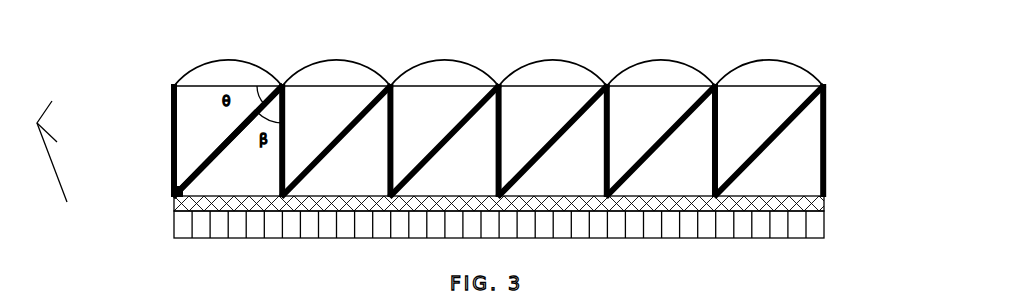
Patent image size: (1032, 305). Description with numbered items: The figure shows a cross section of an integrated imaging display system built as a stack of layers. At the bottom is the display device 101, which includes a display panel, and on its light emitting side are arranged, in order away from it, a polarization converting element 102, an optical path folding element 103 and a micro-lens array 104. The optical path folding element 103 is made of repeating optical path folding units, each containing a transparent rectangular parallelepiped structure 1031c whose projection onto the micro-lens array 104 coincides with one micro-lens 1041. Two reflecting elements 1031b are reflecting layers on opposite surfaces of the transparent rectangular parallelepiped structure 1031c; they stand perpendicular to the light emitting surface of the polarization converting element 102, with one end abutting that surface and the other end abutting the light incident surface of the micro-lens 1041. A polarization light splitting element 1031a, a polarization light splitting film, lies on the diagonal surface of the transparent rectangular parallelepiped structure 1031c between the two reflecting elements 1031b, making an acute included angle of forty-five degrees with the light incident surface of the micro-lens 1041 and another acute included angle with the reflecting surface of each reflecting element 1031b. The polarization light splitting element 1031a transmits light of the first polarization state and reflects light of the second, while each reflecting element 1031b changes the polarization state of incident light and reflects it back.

The display device 101 is at (838, 230).
The polarization converting element 102 is at (838, 203).
The optical path folding element 103 is at (838, 142).
The micro-lens array 104 is at (838, 80).
The micro-lens 1041 is at (803, 55).
The polarization light splitting element 1031a is at (177, 141).
The reflecting element 1031b is at (122, 140).
The transparent rectangular parallelepiped structure 1031c is at (133, 208).